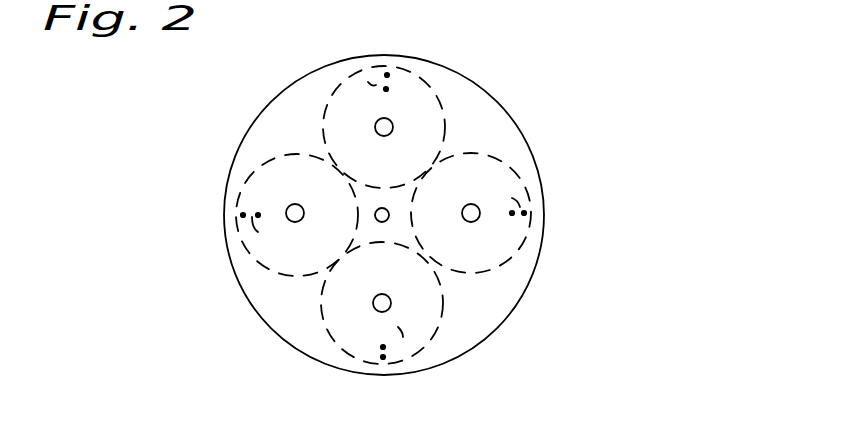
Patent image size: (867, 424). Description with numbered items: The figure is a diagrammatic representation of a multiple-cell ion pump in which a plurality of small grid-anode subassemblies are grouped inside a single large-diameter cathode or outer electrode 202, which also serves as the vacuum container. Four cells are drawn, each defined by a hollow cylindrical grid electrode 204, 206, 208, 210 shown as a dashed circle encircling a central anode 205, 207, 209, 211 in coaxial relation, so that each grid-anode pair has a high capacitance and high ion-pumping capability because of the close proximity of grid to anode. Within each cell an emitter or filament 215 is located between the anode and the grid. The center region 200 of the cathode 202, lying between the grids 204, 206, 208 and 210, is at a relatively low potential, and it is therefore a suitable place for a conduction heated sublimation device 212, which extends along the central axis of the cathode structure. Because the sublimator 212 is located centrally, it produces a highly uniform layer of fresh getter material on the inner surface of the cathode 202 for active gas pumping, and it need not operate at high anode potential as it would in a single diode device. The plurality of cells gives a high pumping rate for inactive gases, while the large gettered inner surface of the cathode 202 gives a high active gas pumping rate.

The center region 200 is at (376, 226).
The cathode 202 is at (528, 287).
The grid 204 is at (236, 197).
The anode 205 is at (312, 192).
The grid 206 is at (383, 65).
The anode 207 is at (380, 136).
The grid 208 is at (530, 190).
The anode 209 is at (467, 222).
The grid 210 is at (338, 345).
The anode 211 is at (378, 312).
The sublimation device 212 is at (383, 208).
The filament 215 is at (433, 38).